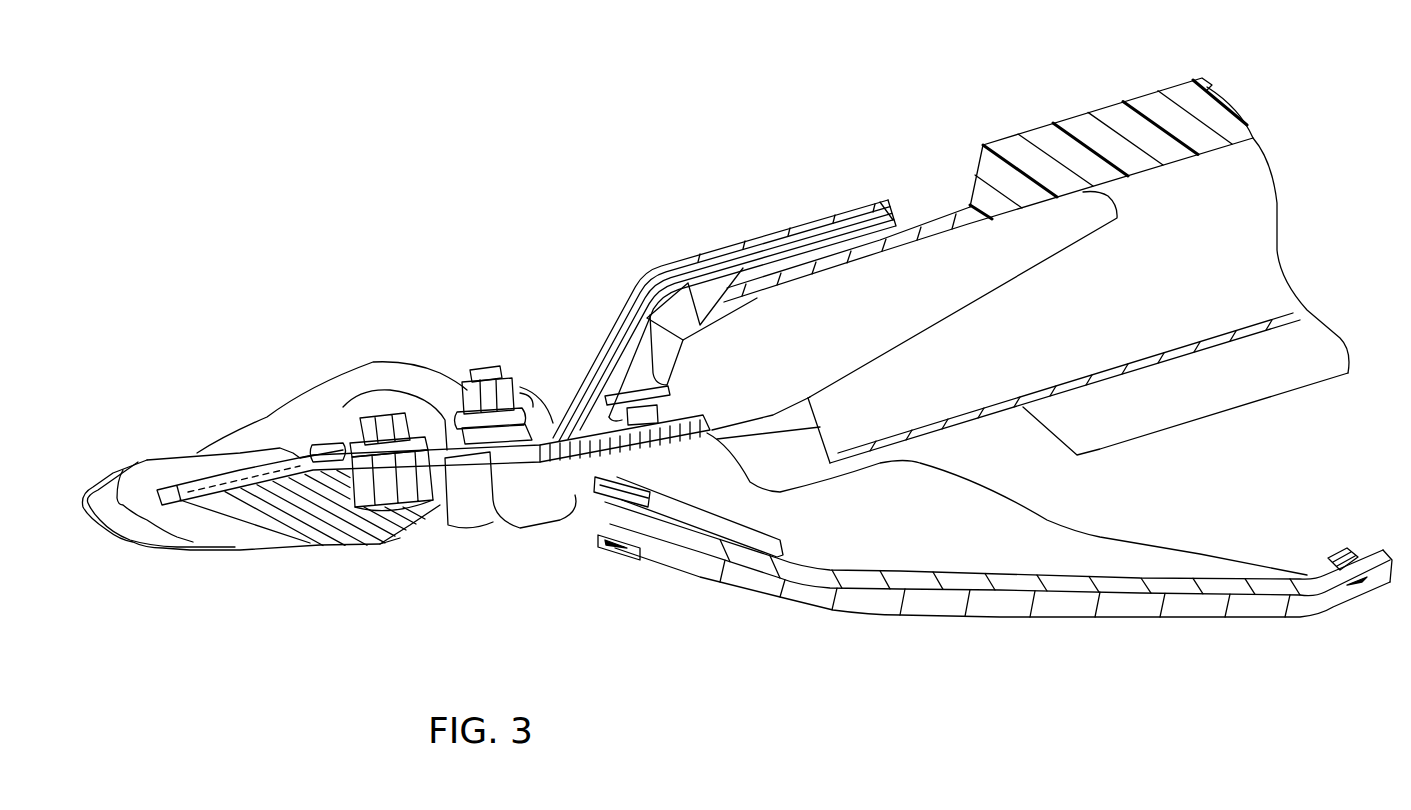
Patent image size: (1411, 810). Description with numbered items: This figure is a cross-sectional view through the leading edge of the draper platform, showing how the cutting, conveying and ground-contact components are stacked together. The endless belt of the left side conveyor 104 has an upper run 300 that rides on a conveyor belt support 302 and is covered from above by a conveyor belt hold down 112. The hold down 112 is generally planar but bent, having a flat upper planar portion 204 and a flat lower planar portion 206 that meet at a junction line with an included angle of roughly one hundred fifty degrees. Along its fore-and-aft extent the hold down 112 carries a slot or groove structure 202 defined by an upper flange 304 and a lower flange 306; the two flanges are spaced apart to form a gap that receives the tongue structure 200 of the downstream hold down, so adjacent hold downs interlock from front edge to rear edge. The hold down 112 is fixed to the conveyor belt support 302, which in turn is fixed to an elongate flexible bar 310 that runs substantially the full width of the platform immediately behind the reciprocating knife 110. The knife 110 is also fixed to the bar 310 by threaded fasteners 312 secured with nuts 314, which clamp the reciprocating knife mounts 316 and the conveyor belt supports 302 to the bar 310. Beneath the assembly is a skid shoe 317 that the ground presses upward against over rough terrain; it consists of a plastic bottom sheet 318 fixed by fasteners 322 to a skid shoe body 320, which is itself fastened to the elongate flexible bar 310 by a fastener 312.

The left side conveyor 104 is at (1085, 122).
The reciprocating knife 110 is at (322, 345).
The conveyor belt hold down 112 is at (850, 215).
The tongue structure 200 is at (880, 202).
The slot or groove structure 202 is at (724, 237).
The upper planar portion 204 is at (761, 182).
The lower planar portion 206 is at (582, 312).
The upper run 300 is at (930, 222).
The conveyor belt support 302 is at (572, 392).
The upper flange 304 is at (727, 265).
The lower flange 306 is at (745, 300).
The elongate flexible bar 310 is at (565, 520).
The threaded fastener 312 is at (490, 530).
The nut 314 is at (455, 380).
The reciprocating knife mount 316 is at (347, 522).
The skid shoe 317 is at (985, 660).
The plastic bottom sheet 318 is at (818, 598).
The skid shoe body 320 is at (1120, 545).
The fastener 322 is at (620, 548).